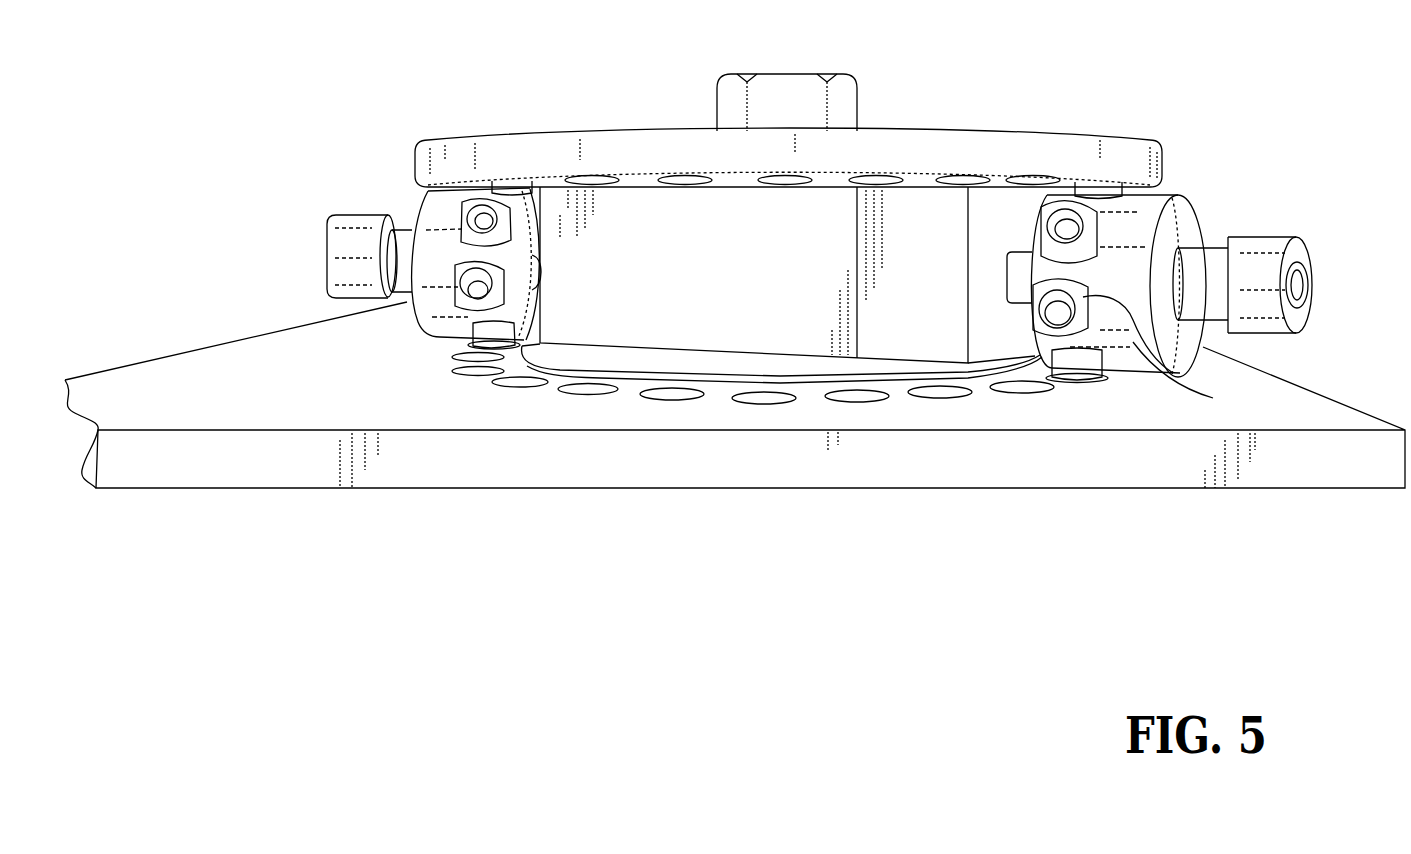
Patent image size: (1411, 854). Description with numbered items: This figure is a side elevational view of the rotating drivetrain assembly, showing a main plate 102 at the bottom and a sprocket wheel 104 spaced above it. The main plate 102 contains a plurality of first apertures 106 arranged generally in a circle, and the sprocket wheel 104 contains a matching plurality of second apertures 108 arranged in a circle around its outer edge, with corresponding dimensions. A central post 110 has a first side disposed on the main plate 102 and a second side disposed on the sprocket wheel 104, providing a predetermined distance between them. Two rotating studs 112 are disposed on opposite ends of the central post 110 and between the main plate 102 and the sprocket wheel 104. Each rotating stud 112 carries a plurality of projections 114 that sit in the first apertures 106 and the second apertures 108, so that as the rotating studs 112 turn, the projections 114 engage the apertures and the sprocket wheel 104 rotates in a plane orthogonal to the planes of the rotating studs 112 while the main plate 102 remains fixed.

The main plate 102 is at (1095, 475).
The sprocket wheel 104 is at (1083, 137).
The first apertures 106 is at (947, 392).
The second apertures 108 is at (778, 178).
The central post 110 is at (653, 215).
The rotating studs 112 is at (445, 208).
The projections 114 is at (1191, 377).